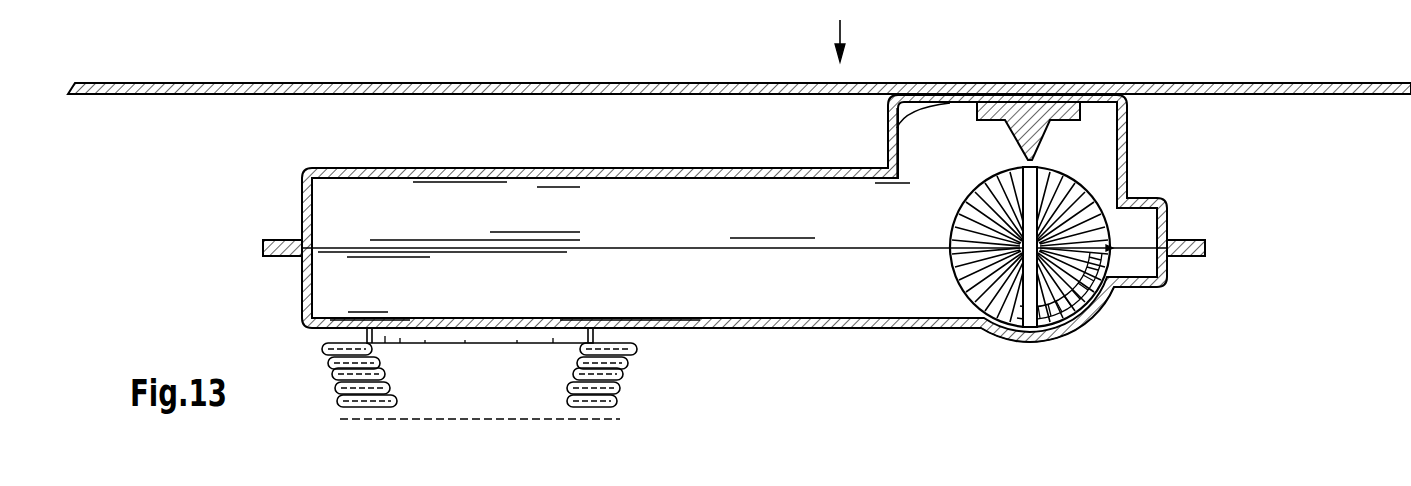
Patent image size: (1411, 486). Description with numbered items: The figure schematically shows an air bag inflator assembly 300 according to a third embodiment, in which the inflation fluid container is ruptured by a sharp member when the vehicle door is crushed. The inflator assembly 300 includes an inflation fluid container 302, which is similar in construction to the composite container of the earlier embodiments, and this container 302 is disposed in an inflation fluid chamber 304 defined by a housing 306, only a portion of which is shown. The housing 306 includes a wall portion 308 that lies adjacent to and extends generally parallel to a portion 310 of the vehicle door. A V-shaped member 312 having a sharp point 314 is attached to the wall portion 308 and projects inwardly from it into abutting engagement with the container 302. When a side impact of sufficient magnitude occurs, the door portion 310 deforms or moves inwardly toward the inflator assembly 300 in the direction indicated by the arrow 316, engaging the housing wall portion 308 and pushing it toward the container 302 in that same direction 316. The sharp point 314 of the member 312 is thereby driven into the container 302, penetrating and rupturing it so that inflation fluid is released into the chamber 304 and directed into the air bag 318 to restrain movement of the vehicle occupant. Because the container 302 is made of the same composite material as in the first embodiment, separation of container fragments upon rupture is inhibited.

The air bag inflator assembly 300 is at (878, 355).
The inflation fluid container 302 is at (912, 268).
The inflation fluid chamber 304 is at (815, 229).
The housing 306 is at (1145, 172).
The wall portion 308 is at (888, 128).
The door portion 310 is at (627, 82).
The V-shaped member 312 is at (1100, 122).
The sharp point 314 is at (1043, 158).
The direction arrow 316 is at (845, 31).
The air bag 318 is at (628, 418).